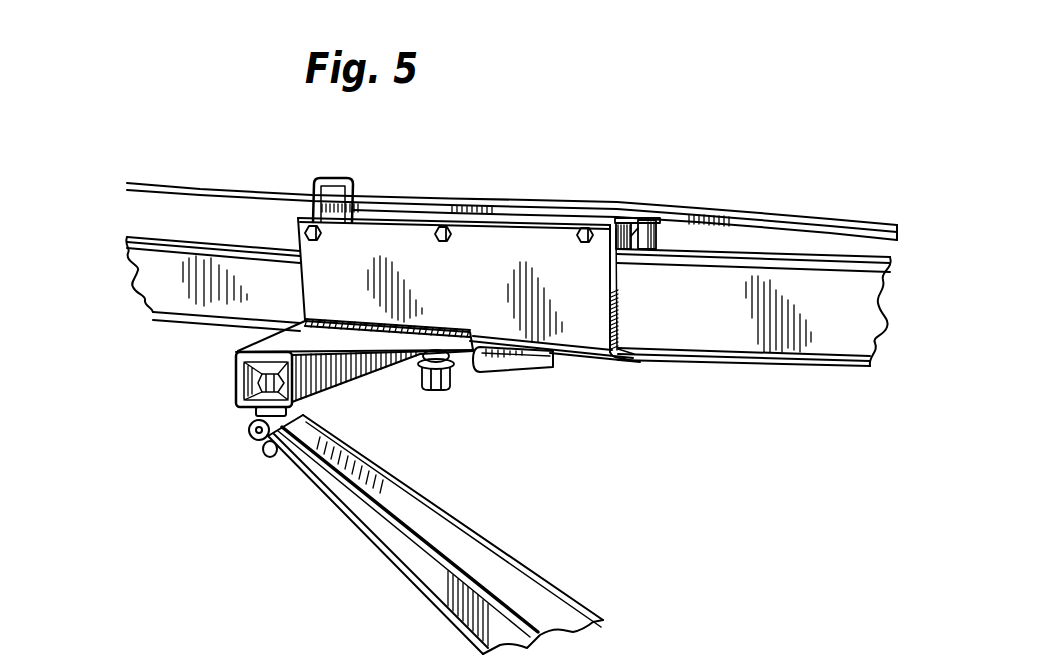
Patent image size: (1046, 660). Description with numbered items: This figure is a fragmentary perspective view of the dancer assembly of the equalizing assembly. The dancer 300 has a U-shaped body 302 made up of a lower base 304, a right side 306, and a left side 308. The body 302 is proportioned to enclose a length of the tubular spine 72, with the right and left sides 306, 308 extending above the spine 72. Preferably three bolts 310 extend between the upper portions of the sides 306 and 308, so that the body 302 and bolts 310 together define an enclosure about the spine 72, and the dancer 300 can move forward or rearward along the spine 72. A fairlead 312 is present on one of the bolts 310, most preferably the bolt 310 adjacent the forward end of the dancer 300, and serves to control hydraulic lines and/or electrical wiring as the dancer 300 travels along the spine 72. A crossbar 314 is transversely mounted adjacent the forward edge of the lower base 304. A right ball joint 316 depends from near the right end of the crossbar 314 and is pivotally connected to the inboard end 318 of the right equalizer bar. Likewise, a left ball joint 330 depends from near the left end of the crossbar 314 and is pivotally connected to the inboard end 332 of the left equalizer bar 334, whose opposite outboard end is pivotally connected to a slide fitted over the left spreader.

The tubular spine 72 is at (854, 326).
The dancer 300 is at (586, 331).
The U-shaped body 302 is at (567, 340).
The lower base 304 is at (628, 356).
The right side 306 is at (473, 301).
The left side 308 is at (656, 232).
The bolts 310 is at (322, 227).
The fairlead 312 is at (333, 178).
The crossbar 314 is at (358, 372).
The right ball joint 316 is at (432, 391).
The inboard end 318 is at (492, 372).
The left ball joint 330 is at (256, 441).
The inboard end 332 is at (323, 489).
The left equalizer bar 334 is at (448, 617).